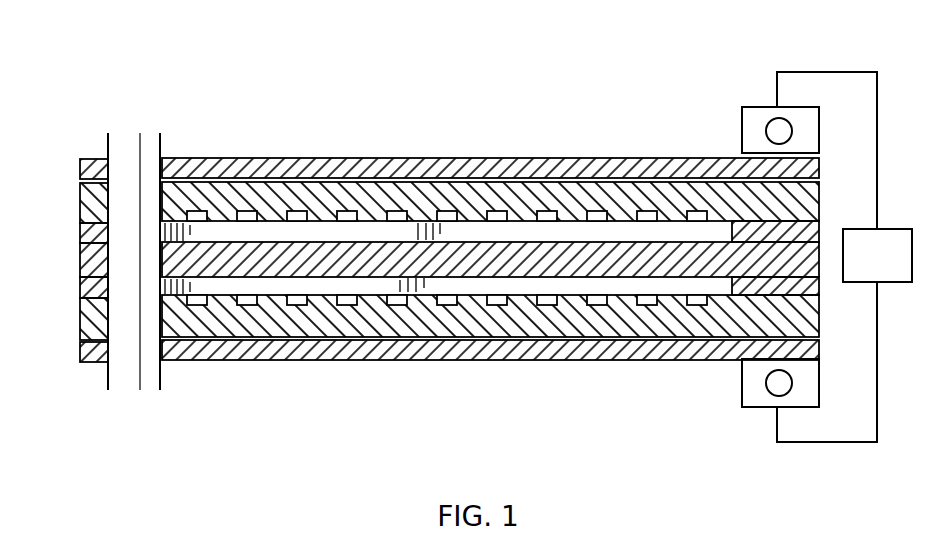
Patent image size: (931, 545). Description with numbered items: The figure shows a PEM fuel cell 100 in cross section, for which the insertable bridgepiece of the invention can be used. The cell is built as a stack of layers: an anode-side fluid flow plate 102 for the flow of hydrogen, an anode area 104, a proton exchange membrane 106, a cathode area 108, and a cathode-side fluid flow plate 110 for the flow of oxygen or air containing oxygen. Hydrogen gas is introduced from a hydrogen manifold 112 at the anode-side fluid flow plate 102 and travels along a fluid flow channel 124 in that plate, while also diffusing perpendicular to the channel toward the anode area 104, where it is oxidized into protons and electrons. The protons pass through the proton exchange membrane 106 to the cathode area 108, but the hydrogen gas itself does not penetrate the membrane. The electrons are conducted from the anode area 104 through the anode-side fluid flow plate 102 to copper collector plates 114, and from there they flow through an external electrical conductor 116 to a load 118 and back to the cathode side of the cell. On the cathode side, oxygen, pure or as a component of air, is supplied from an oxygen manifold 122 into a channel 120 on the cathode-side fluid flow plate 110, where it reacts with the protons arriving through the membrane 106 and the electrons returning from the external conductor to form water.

The PEM fuel cell 100 is at (597, 92).
The anode-side fluid flow plate 102 is at (74, 322).
The anode area 104 is at (498, 300).
The proton exchange membrane 106 is at (74, 262).
The cathode area 108 is at (494, 222).
The cathode-side fluid flow plate 110 is at (74, 200).
The hydrogen manifold 112 is at (157, 394).
The copper collector plates 114 is at (637, 150).
The external electrical conductor 116 is at (802, 72).
The load 118 is at (862, 229).
The channel 120 is at (299, 216).
The oxygen manifold 122 is at (126, 394).
The fluid flow channel 124 is at (400, 305).